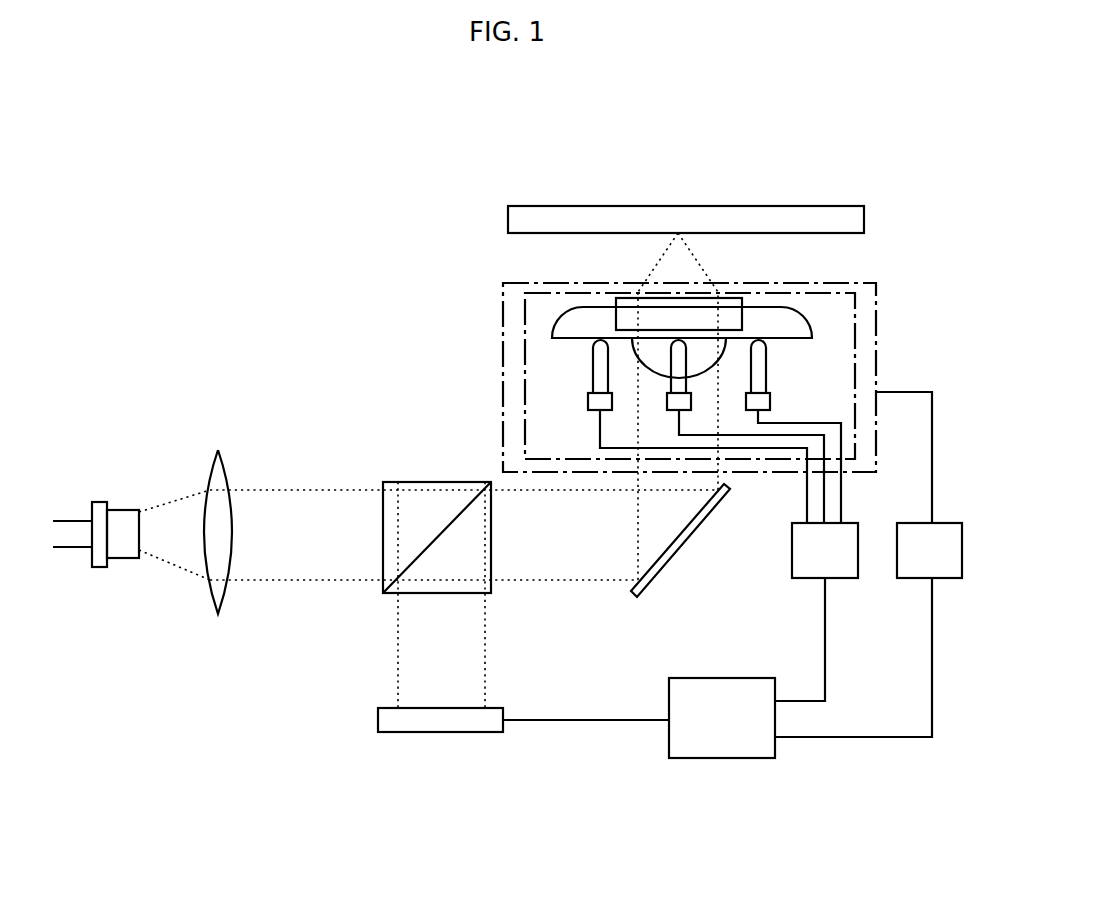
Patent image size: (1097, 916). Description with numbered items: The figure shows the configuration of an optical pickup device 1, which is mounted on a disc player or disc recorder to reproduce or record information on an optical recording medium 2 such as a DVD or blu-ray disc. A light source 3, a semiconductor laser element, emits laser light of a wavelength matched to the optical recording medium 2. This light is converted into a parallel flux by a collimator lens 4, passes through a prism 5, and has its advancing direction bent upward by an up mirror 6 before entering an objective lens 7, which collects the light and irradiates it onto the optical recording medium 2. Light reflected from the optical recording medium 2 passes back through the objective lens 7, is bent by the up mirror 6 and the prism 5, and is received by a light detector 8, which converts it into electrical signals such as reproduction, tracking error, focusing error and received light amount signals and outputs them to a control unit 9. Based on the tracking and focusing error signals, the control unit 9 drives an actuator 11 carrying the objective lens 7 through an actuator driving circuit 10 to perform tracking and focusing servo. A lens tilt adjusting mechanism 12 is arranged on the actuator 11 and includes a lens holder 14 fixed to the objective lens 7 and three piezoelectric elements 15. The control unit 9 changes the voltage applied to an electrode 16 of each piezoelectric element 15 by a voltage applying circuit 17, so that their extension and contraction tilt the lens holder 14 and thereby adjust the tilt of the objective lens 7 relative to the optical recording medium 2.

The optical pickup device 1 is at (178, 249).
The optical recording medium 2 is at (794, 206).
The light source 3 is at (120, 510).
The collimator lens 4 is at (210, 484).
The prism 5 is at (413, 482).
The up mirror 6 is at (681, 540).
The objective lens 7 is at (720, 367).
The light detector 8 is at (476, 732).
The control unit 9 is at (748, 758).
The actuator driving circuit 10 is at (950, 578).
The actuator 11 is at (877, 313).
The lens tilt adjusting mechanism 12 is at (824, 292).
The lens holder 14 is at (792, 338).
The piezoelectric elements 15 is at (593, 377).
The electrode 16 is at (588, 405).
The voltage applying circuit 17 is at (846, 578).